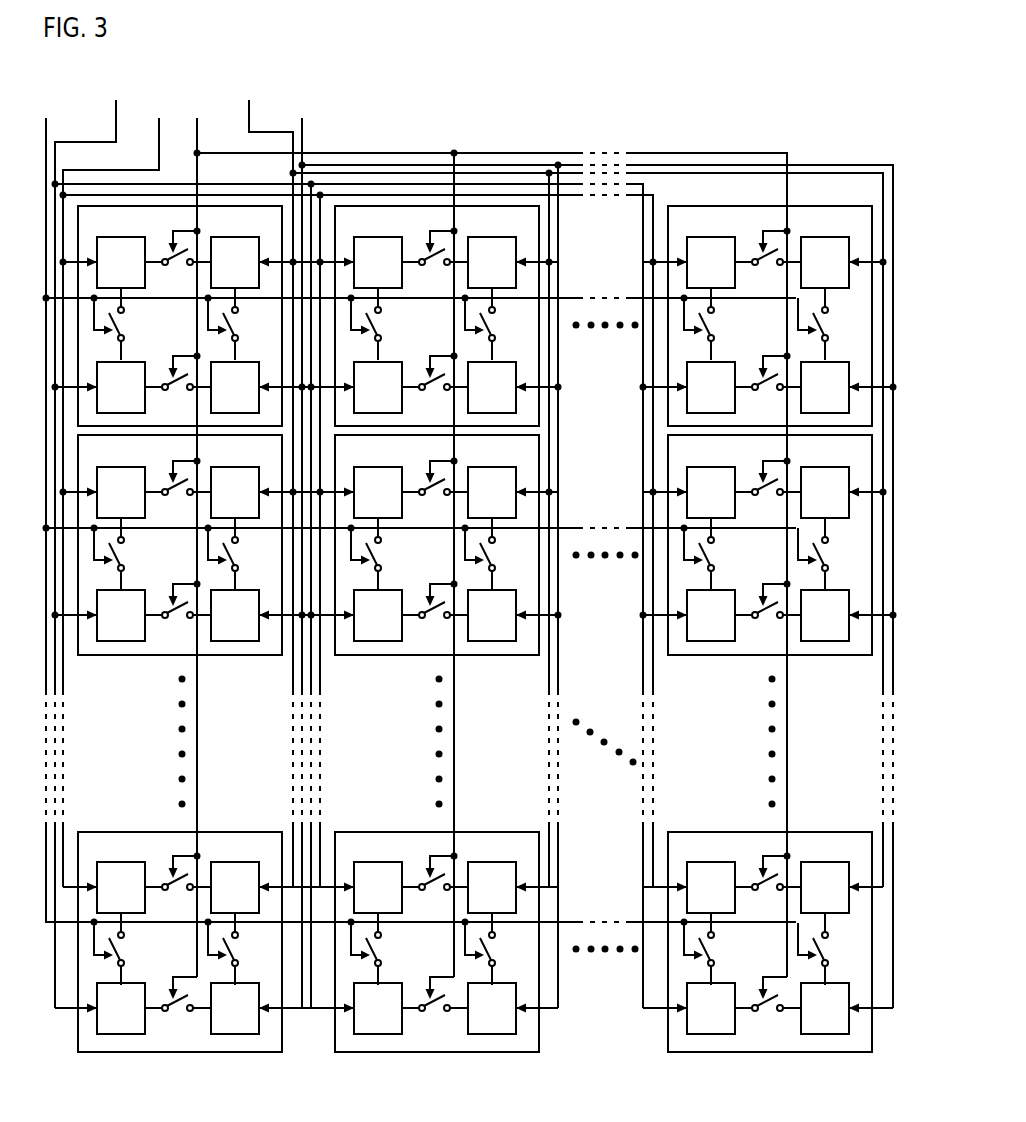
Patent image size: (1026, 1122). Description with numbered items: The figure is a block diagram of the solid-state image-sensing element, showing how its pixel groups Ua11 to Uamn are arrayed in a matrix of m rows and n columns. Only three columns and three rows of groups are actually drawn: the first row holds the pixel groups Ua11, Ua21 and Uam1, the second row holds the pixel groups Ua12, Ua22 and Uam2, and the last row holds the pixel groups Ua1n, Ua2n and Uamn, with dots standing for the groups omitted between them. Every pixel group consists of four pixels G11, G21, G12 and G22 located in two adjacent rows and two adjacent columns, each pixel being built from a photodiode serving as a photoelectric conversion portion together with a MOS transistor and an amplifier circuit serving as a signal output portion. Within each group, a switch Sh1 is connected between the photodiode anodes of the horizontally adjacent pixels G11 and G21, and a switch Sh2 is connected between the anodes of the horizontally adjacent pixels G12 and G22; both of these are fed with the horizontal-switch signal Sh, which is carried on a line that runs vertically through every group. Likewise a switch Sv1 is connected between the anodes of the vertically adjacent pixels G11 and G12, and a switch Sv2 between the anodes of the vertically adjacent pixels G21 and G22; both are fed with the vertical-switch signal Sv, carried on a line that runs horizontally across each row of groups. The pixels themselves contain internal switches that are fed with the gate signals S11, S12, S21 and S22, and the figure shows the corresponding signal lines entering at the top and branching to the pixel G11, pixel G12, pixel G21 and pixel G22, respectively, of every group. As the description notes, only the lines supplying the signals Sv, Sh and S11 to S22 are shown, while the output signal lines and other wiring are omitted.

The pixel G11 is at (416, 575).
The pixel G21 is at (530, 575).
The pixel G12 is at (416, 698).
The pixel G22 is at (530, 698).
The switch Sh1 is at (473, 575).
The switch Sh2 is at (473, 698).
The switch Sv1 is at (421, 636).
The switch Sv2 is at (535, 636).
The pixel group Ua11 is at (180, 316).
The pixel group Ua21 is at (437, 316).
The pixel group Uam1 is at (770, 316).
The pixel group Ua12 is at (180, 545).
The pixel group Ua22 is at (437, 545).
The pixel group Uam2 is at (770, 545).
The pixel group Ua1n is at (180, 942).
The pixel group Ua2n is at (437, 942).
The pixel group Uamn is at (770, 942).
The signal φ Sv is at (420, 511).
The signal φ Sh is at (491, 537).
The signal φ S11 is at (358, 492).
The signal φ S12 is at (349, 539).
The signal φ S21 is at (552, 479).
The signal φ S22 is at (582, 552).